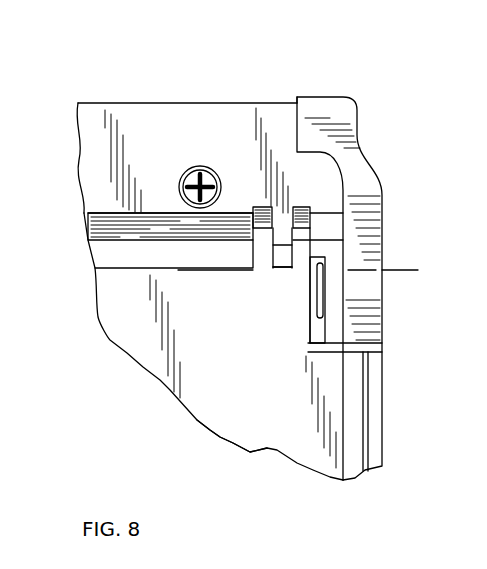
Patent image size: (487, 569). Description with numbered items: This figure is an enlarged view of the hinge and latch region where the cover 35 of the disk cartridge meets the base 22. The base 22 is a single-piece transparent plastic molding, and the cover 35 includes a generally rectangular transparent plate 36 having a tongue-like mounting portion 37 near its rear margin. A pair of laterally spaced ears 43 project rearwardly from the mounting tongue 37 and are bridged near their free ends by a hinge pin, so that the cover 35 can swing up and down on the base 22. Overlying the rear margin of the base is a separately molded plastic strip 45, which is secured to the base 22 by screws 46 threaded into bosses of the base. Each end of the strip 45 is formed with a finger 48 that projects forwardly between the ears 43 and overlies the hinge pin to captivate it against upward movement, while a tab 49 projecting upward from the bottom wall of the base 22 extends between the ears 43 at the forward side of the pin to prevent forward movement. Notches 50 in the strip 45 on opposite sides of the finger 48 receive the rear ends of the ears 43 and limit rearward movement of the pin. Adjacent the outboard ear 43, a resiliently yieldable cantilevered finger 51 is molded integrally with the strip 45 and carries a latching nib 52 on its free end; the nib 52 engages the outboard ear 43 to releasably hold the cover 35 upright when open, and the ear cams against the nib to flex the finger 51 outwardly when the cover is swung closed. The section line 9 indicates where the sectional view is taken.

The section line 9- 9 is at (178, 273).
The base 22 is at (380, 447).
The cover 35 is at (243, 436).
The plate 36 is at (202, 418).
The mounting tongue 37 is at (355, 348).
The ears 43 is at (273, 246).
The strip 45 is at (165, 132).
The screws 46 is at (200, 190).
The finger 48 is at (282, 249).
The tab 49 is at (288, 268).
The notches 50 is at (293, 228).
The cantilevered finger 51 is at (318, 288).
The latching nib 52 is at (318, 264).